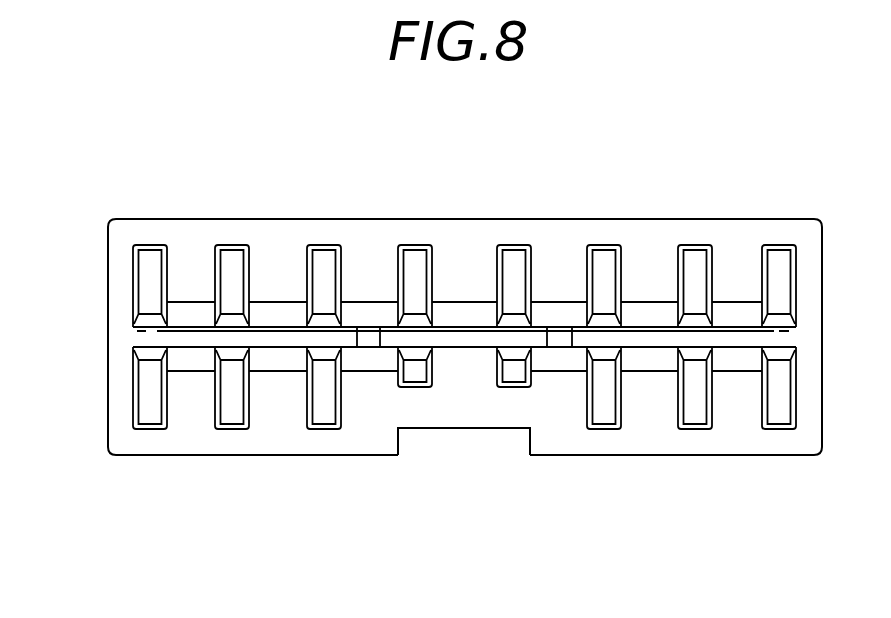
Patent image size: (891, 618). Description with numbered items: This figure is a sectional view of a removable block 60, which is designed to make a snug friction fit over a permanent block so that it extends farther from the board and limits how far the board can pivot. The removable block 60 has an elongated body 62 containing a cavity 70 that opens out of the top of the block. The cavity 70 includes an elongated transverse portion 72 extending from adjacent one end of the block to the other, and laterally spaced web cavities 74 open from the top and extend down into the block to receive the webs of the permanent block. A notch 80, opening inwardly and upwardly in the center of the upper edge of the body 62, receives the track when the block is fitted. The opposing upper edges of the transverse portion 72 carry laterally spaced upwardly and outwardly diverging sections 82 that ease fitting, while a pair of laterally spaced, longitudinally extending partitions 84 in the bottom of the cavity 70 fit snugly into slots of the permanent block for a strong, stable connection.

The removable block 60 is at (785, 466).
The elongated body 62 is at (712, 456).
The cavity 70 is at (515, 340).
The elongated transverse portion 72 is at (128, 336).
The web cavities 74 is at (148, 260).
The notch 80 is at (0, 175).
The upwardly and outwardly diverging sections 82 is at (193, 312).
The partitions 84 is at (557, 340).